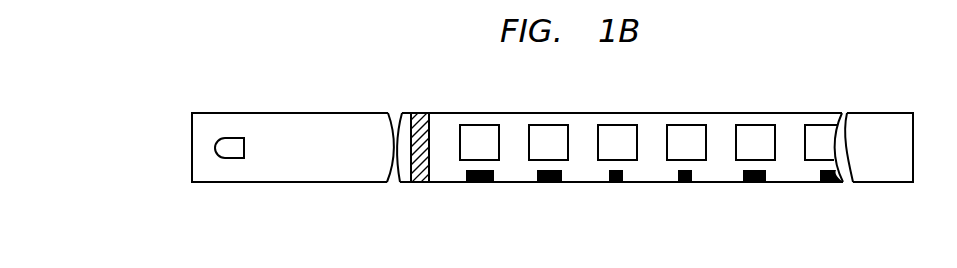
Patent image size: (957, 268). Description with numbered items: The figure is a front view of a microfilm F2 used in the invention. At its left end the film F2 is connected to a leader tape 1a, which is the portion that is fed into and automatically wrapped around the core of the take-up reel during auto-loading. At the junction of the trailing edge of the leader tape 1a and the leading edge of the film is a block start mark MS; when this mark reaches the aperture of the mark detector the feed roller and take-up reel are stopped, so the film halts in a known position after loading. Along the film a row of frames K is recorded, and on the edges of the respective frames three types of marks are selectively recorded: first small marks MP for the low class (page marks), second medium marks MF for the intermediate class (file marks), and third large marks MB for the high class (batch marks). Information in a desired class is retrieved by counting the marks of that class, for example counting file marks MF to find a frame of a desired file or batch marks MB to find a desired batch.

The leader tape 1a is at (323, 175).
The film F2 is at (343, 122).
The block start mark MS is at (419, 183).
The picture frame K is at (482, 132).
The third large mark (batch mark) MB is at (478, 183).
The second medium mark (file mark) MF is at (548, 183).
The first small mark (page mark) MP is at (617, 183).